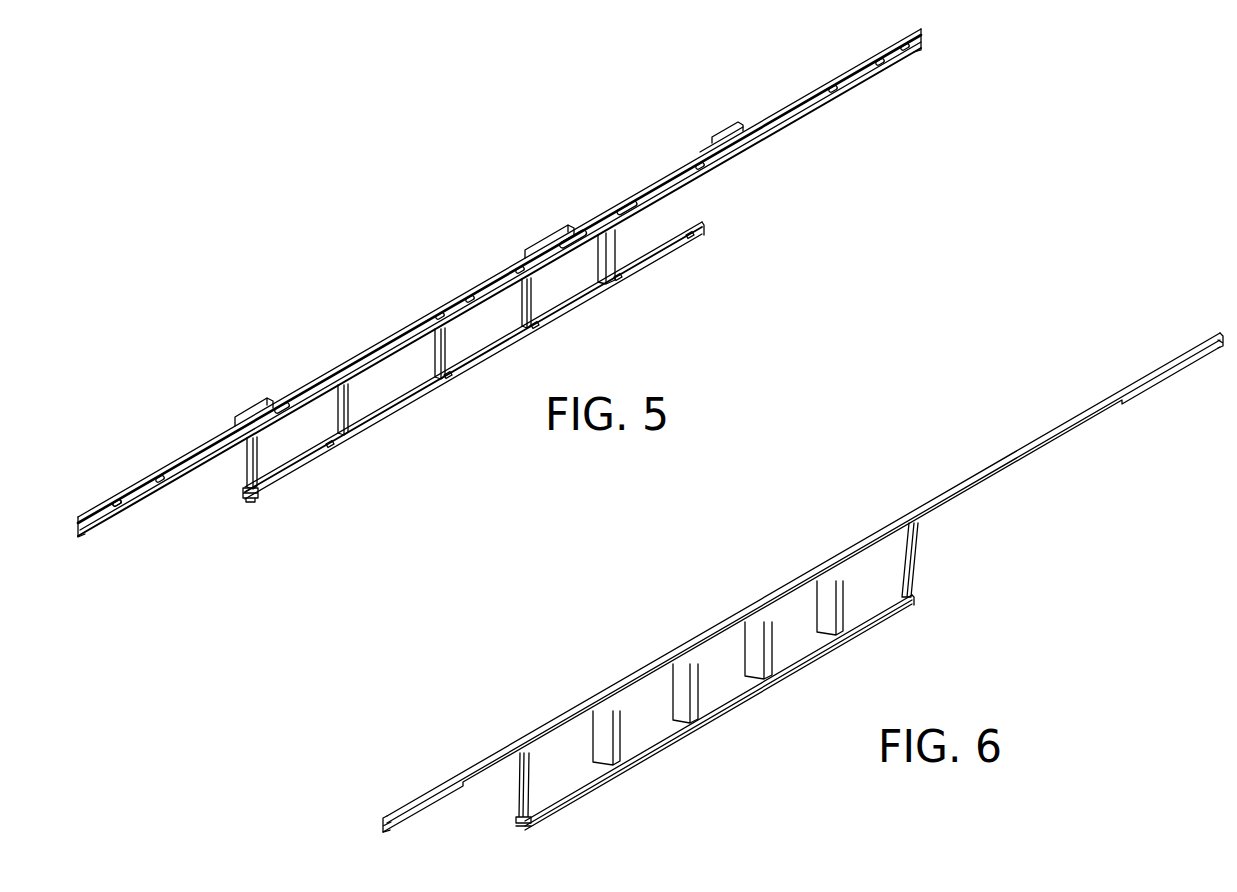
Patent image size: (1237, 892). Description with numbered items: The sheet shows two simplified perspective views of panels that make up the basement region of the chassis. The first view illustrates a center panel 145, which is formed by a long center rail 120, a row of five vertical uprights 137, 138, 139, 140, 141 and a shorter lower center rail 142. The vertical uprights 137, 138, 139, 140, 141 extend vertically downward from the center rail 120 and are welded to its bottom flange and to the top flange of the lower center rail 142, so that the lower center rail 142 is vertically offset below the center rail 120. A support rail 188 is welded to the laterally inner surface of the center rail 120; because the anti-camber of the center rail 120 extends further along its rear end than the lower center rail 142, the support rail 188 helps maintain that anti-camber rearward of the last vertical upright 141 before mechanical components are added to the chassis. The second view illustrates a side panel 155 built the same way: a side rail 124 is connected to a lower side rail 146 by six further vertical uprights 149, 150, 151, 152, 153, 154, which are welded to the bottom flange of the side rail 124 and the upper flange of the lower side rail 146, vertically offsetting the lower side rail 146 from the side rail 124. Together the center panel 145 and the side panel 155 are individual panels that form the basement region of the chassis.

In FIG. 5, the center rail 120 is at (380, 336).
In FIG. 5, the support rail 188 is at (668, 166).
In FIG. 5, the vertical upright 137 is at (264, 459).
In FIG. 5, the vertical upright 138 is at (356, 398).
In FIG. 5, the vertical upright 139 is at (447, 347).
In FIG. 5, the vertical upright 140 is at (534, 300).
In FIG. 5, the vertical upright 141 is at (618, 248).
In FIG. 5, the lower center rail 142 is at (265, 502).
In FIG. 5, the center panel 145 is at (577, 186).
In FIG. 6, the side rail 124 is at (975, 468).
In FIG. 6, the lower side rail 146 is at (886, 617).
In FIG. 6, the vertical upright 149 is at (522, 786).
In FIG. 6, the vertical upright 150 is at (607, 752).
In FIG. 6, the vertical upright 151 is at (682, 703).
In FIG. 6, the vertical upright 152 is at (757, 658).
In FIG. 6, the vertical upright 153 is at (830, 613).
In FIG. 6, the vertical upright 154 is at (920, 545).
In FIG. 6, the side panel 155 is at (889, 505).